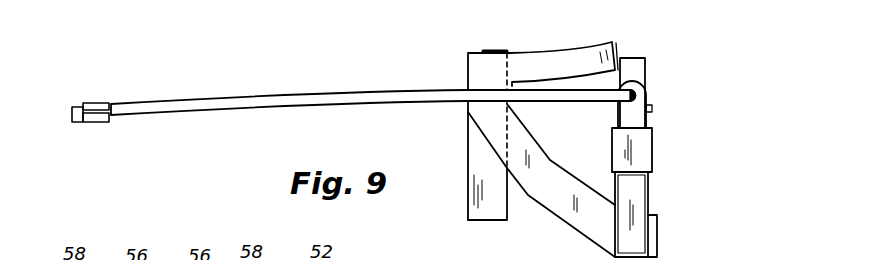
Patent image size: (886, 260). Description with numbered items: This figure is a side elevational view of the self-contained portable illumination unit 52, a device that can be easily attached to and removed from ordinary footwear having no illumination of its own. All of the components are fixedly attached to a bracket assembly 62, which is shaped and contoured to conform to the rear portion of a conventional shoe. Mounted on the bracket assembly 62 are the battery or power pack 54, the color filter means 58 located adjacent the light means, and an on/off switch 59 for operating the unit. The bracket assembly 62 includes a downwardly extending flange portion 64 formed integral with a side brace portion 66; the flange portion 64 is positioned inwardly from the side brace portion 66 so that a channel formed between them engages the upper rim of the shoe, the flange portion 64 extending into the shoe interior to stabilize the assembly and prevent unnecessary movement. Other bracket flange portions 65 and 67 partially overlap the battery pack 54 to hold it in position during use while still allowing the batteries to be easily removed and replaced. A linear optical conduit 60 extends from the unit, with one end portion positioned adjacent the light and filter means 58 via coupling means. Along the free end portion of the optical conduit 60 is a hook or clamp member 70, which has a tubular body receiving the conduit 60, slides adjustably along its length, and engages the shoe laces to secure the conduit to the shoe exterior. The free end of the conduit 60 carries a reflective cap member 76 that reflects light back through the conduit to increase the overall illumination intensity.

The illumination unit 52 is at (598, 130).
The battery or power pack 54 is at (648, 192).
The color filter means 58 is at (647, 62).
The on/off switch 59 is at (653, 108).
The linear optical conduit 60 is at (205, 116).
The bracket assembly 62 is at (543, 52).
The downwardly extending flange portion 64 is at (468, 197).
The bracket flange portion 65 is at (647, 152).
The side brace portion 66 is at (538, 164).
The bracket flange portion 67 is at (657, 238).
The hook or clamp member 70 is at (93, 102).
The reflective cap member 76 is at (77, 123).